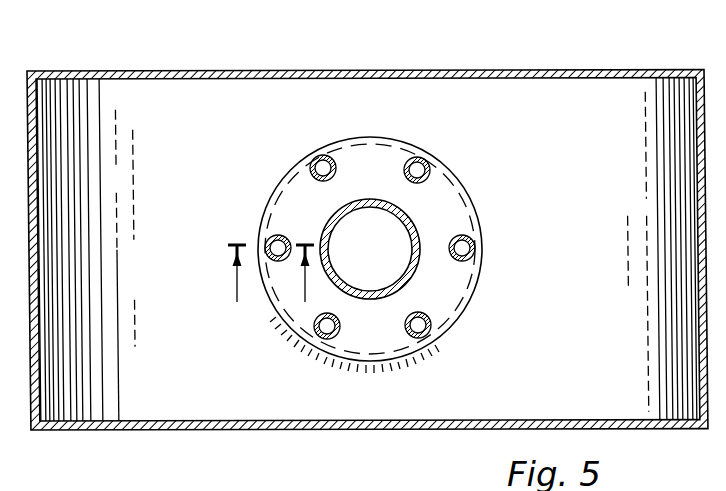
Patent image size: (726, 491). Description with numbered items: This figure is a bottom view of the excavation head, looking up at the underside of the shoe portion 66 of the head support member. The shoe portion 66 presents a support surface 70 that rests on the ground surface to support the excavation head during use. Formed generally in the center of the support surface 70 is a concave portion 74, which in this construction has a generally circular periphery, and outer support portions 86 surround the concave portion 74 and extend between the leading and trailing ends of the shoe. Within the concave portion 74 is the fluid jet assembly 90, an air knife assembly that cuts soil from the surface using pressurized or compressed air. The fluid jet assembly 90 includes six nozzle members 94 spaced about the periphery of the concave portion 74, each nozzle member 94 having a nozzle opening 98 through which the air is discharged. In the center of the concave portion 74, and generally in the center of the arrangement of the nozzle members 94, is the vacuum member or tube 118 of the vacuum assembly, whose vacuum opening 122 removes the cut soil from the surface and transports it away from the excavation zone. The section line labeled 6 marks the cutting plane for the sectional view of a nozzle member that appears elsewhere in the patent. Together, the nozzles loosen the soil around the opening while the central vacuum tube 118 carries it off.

The section line 6- 6 is at (260, 273).
The shoe portion 66 is at (137, 72).
The support surface 70 is at (606, 247).
The concave portion 74 is at (320, 214).
The outer support portions 86 is at (616, 88).
The fluid jet assembly 90 is at (266, 326).
The nozzle members 94 is at (309, 164).
The nozzle opening 98 is at (334, 160).
The vacuum member or tube 118 is at (408, 281).
The vacuum opening 122 is at (372, 279).